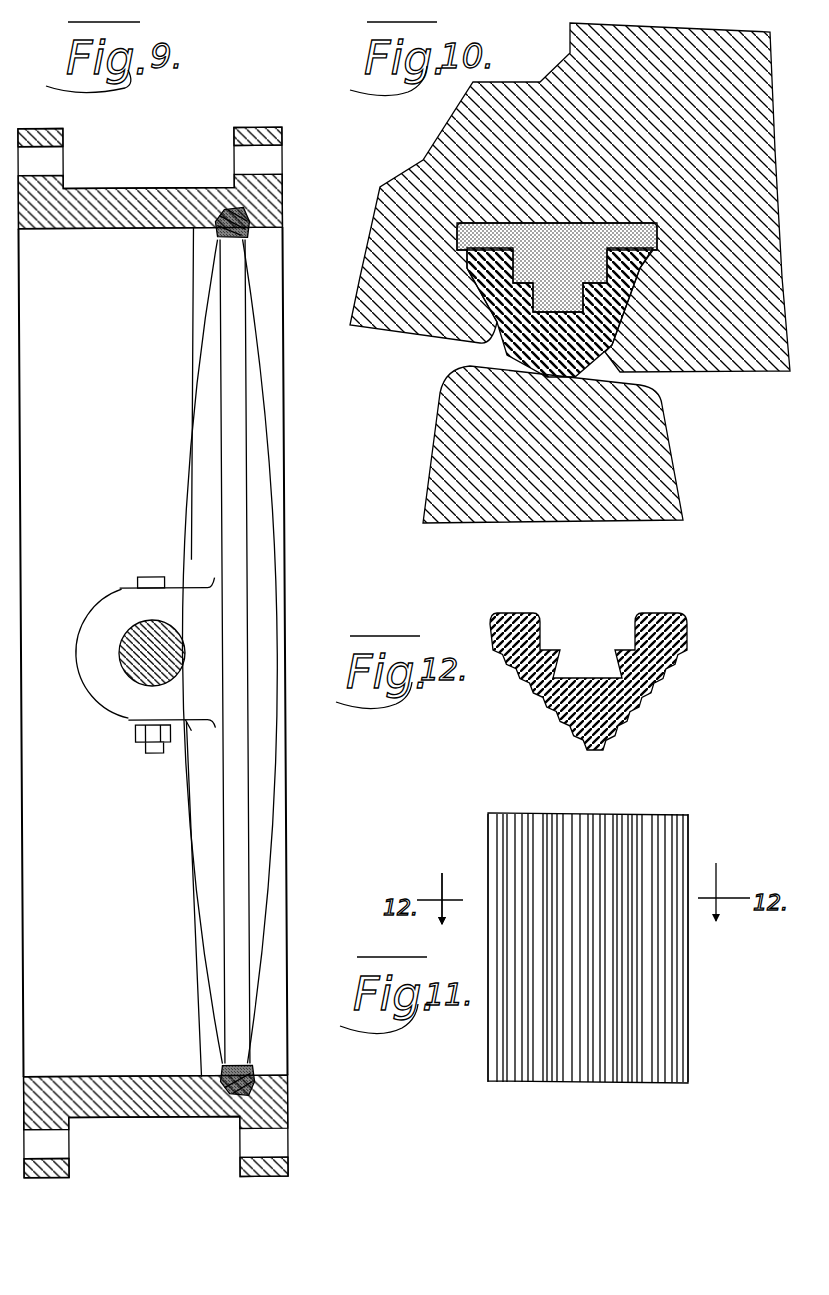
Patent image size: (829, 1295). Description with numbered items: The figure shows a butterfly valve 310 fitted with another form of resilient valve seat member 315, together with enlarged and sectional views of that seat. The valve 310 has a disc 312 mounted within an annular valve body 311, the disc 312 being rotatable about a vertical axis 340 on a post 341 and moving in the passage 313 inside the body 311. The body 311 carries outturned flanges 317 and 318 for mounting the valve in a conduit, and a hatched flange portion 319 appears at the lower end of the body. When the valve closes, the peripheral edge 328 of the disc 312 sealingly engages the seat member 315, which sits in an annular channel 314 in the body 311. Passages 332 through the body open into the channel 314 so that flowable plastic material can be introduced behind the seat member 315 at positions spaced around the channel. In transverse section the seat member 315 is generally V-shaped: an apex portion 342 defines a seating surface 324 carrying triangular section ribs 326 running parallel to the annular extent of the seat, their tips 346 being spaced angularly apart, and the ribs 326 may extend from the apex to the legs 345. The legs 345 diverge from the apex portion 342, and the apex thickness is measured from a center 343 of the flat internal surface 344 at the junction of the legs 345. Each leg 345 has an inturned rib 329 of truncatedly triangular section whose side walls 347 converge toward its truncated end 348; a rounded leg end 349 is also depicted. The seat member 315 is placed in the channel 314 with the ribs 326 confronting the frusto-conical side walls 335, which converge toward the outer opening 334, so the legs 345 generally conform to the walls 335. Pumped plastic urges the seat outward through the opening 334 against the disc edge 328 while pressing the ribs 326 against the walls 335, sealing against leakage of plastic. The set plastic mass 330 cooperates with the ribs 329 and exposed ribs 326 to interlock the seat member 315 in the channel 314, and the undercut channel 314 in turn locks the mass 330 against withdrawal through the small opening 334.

In FIG. 9, the butterfly valve 310 is at (160, 416).
In FIG. 9, the annular valve body 311 is at (268, 210).
In FIG. 9, the disc 312 is at (213, 320).
In FIG. 9, the passage 313 is at (88, 230).
In FIG. 9, the annular channel 314 is at (285, 1076).
In FIG. 10, the annular channel 314 is at (627, 317).
In FIG. 10, the valve seat member 315 is at (468, 348).
In FIG. 12, the valve seat member 315 is at (515, 713).
In FIG. 11, the valve seat member 315 is at (680, 977).
In FIG. 9, the outturned flange 317 is at (65, 133).
In FIG. 9, the outturned flange 318 is at (285, 131).
In FIG. 9, the flange 319 is at (156, 1167).
In FIG. 12, the seating surface 324 is at (588, 752).
In FIG. 12, the triangular section ribs 326 is at (643, 718).
In FIG. 11, the triangular section ribs 326 is at (638, 828).
In FIG. 10, the peripheral edge of disc 328 is at (630, 390).
In FIG. 10, the inturned ribs 329 is at (630, 266).
In FIG. 12, the inturned ribs 329 is at (633, 633).
In FIG. 9, the set plastic mass 330 is at (243, 210).
In FIG. 10, the set plastic mass 330 is at (537, 228).
In FIG. 9, the passages 332 is at (226, 208).
In FIG. 10, the outer opening 334 is at (617, 380).
In FIG. 10, the frusto-conical side walls 335 is at (473, 282).
In FIG. 9, the vertical axis 340 is at (130, 682).
In FIG. 9, the post 341 is at (143, 627).
In FIG. 10, the apex portion 342 is at (500, 347).
In FIG. 12, the apex portion 342 is at (583, 738).
In FIG. 12, the center 343 is at (562, 715).
In FIG. 12, the flat internal surface 344 is at (567, 685).
In FIG. 12, the legs 345 is at (498, 632).
In FIG. 12, the tips of ribs 346 is at (657, 693).
In FIG. 11, the tips of ribs 346 is at (586, 813).
In FIG. 10, the side walls of ribs 347 is at (570, 217).
In FIG. 10, the truncated ends 348 is at (600, 225).
In FIG. 12, the lobe 349 is at (678, 620).